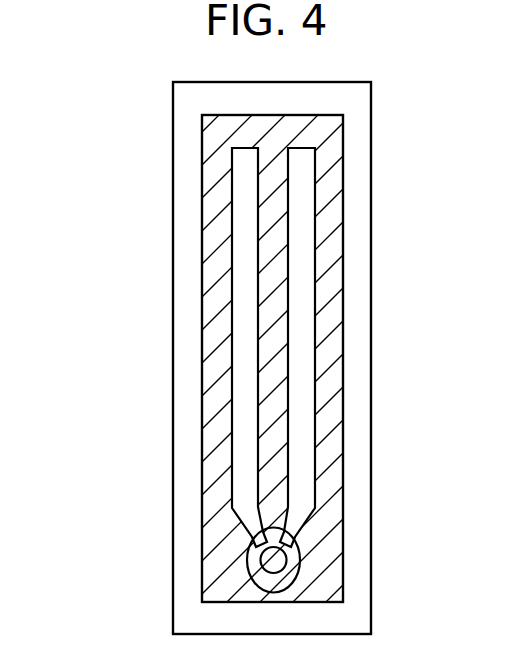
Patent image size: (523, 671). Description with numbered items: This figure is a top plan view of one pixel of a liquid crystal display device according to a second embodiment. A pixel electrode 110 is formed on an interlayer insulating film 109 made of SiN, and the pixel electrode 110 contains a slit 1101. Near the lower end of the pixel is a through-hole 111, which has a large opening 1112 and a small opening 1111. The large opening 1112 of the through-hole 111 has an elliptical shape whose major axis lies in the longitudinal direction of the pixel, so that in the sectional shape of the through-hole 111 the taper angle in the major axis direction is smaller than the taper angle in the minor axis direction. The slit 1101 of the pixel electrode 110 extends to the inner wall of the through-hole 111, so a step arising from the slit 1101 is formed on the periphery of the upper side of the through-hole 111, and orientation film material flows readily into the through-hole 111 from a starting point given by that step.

The interlayer insulating film 109 is at (357, 402).
The pixel electrode 110 is at (332, 343).
The slit 1101 is at (302, 282).
The through-hole 111 is at (156, 563).
The small opening 1111 is at (252, 587).
The large opening 1112 is at (260, 561).